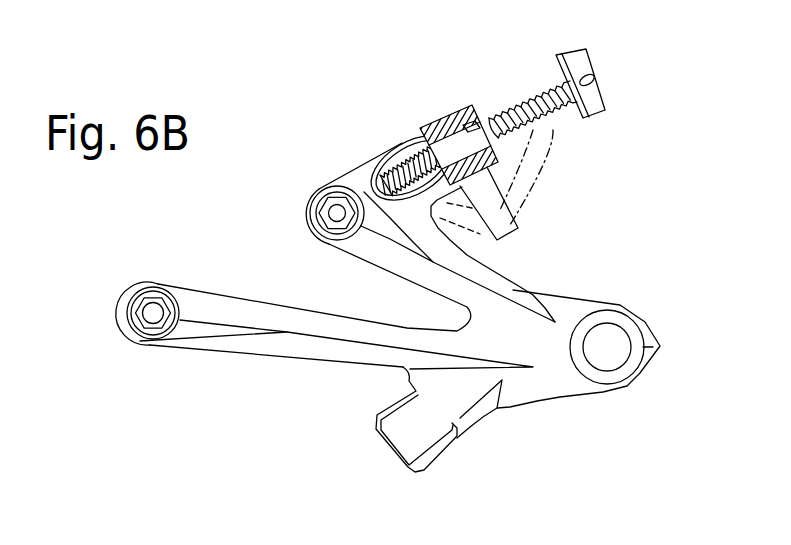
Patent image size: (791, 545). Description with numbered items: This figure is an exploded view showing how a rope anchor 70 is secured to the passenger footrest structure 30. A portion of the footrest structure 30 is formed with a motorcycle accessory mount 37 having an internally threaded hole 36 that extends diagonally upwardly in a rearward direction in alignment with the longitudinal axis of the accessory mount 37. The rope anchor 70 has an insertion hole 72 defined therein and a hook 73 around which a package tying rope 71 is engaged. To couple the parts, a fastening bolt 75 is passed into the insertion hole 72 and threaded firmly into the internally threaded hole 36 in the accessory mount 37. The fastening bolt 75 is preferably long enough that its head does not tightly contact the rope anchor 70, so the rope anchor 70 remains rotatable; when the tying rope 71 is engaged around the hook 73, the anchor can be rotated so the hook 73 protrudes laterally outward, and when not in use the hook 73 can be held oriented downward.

The passenger footrest structure 30 is at (388, 264).
The internally threaded hole 36 is at (410, 140).
The motorcycle accessory mount 37 is at (397, 147).
The rope anchor 70 is at (455, 102).
The package tying rope 71 is at (546, 158).
The insertion hole 72 is at (480, 123).
The hook 73 is at (512, 238).
The fastening bolt 75 is at (604, 93).